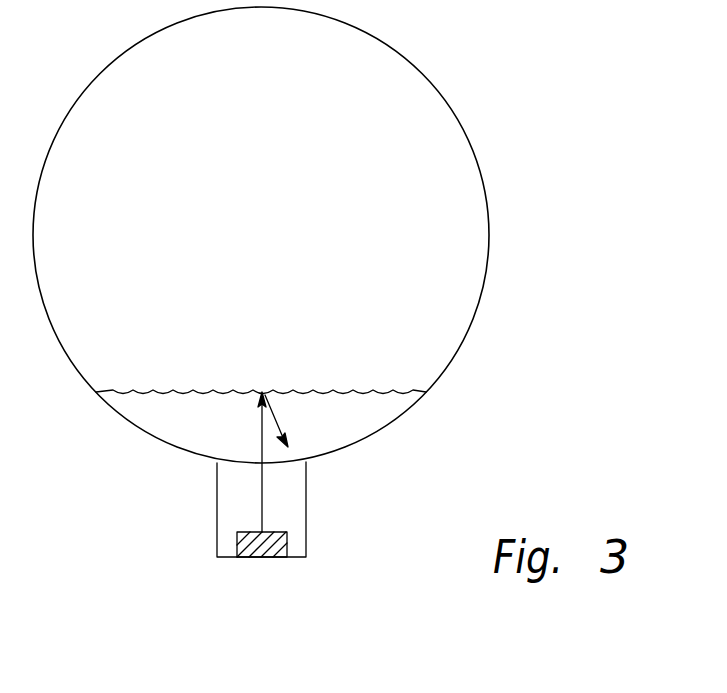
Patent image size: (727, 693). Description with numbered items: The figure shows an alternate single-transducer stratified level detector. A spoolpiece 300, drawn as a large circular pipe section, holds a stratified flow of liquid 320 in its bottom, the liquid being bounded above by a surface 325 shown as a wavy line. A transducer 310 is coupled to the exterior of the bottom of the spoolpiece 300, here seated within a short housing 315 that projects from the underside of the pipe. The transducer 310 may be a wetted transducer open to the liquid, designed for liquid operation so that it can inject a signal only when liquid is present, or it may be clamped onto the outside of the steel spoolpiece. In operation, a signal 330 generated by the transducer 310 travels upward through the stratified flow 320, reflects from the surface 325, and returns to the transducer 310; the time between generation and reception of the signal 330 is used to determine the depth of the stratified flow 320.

The spoolpiece 300 is at (135, 45).
The transducer 310 is at (258, 557).
The tube 315 is at (217, 509).
The stratified flow of liquid 320 is at (337, 402).
The surface 325 is at (182, 392).
The signal 330 is at (262, 499).